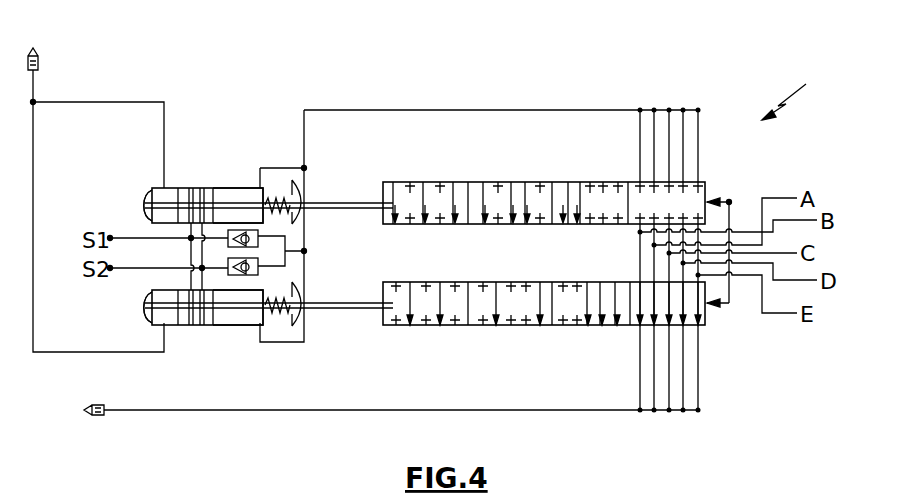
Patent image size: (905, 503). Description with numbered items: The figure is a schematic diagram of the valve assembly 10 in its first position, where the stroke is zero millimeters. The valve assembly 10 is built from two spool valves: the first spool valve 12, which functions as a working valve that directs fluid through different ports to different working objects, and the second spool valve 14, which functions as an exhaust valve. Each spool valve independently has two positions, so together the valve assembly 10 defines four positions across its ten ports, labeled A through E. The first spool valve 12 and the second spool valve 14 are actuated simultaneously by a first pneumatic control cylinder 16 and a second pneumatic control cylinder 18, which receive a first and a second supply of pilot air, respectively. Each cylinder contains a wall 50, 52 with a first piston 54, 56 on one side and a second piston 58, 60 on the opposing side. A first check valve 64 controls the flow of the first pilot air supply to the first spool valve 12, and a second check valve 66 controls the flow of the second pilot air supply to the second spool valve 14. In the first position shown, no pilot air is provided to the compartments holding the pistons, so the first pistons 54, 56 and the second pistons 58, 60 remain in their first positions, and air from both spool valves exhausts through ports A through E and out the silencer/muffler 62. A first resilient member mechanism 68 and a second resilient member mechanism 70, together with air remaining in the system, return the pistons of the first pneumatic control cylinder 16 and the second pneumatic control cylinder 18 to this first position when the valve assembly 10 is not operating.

The valve assembly 10 is at (801, 91).
The first spool valve 12 is at (515, 181).
The second spool valve 14 is at (515, 326).
The first pneumatic control cylinder 16 is at (172, 188).
The second pneumatic control cylinder 18 is at (237, 325).
The wall 50 is at (195, 188).
The wall 52 is at (193, 325).
The first piston 54 is at (150, 228).
The first piston 56 is at (150, 285).
The second piston 58 is at (241, 188).
The second piston 60 is at (247, 325).
The silencer/muffler 62 is at (38, 54).
The first check valve 64 is at (247, 243).
The second check valve 66 is at (247, 271).
The first resilient member mechanism 68 is at (285, 195).
The second resilient member mechanism 70 is at (278, 313).